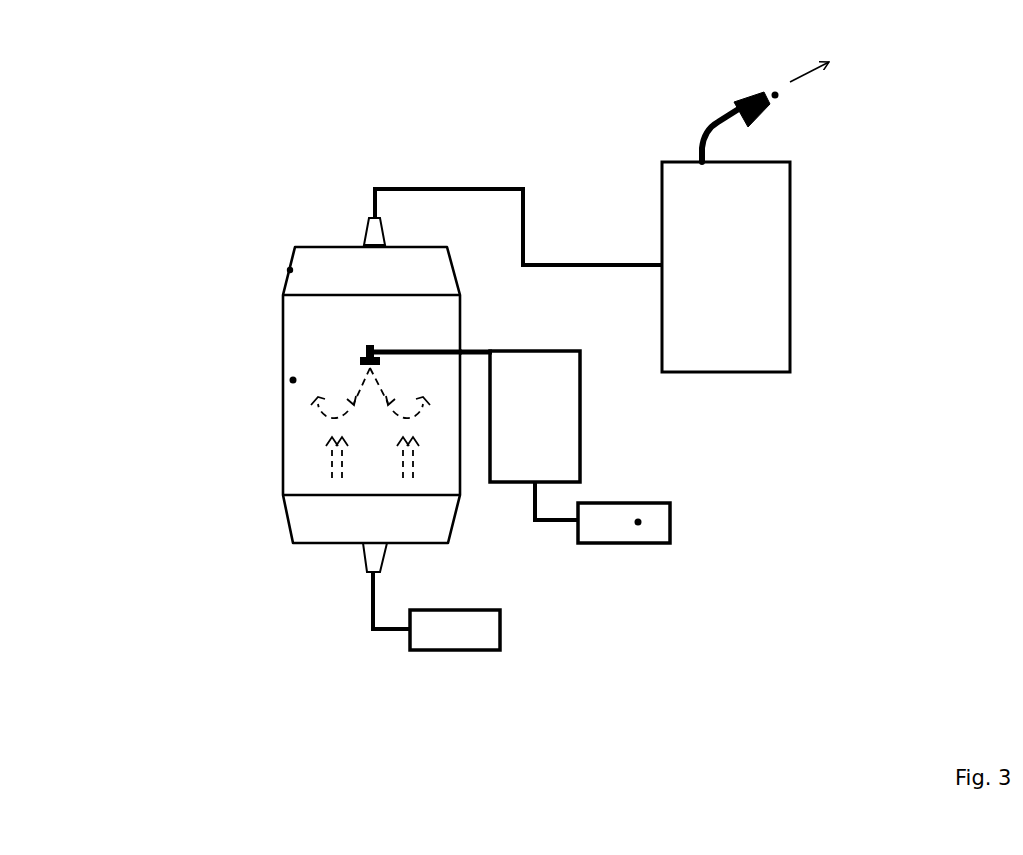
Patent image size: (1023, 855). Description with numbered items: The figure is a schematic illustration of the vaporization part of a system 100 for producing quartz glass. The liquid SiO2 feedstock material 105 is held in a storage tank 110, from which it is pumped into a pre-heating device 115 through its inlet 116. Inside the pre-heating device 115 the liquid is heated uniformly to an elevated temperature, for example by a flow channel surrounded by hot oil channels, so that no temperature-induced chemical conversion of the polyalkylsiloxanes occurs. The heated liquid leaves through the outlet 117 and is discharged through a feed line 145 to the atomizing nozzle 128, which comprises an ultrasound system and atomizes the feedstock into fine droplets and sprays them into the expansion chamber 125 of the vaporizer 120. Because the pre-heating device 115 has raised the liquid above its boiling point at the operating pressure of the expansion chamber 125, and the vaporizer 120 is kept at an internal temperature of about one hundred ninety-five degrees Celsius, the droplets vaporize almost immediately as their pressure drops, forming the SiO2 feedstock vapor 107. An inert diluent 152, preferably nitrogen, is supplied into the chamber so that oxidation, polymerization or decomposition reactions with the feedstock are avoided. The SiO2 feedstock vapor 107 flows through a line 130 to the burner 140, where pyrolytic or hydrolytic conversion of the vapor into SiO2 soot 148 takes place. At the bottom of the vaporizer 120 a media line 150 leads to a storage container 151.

The system 100 is at (271, 237).
The SiO2 feedstock material 105 is at (638, 522).
The SiO2 feedstock vapor 107 is at (320, 410).
The storage tank 110 is at (670, 522).
The pre-heating device 115 is at (580, 418).
The inlet 116 is at (533, 521).
The outlet 117 is at (497, 350).
The vaporizer 120 is at (290, 270).
The expansion chamber 125 is at (293, 380).
The atomizing nozzle 128 is at (365, 356).
The line 130 is at (428, 188).
The burner 140 is at (708, 130).
The feed line 145 is at (437, 348).
The SiO2 soot 148 is at (810, 82).
The media line 150 is at (368, 602).
The storage container 151 is at (455, 652).
The diluent 152 is at (323, 460).